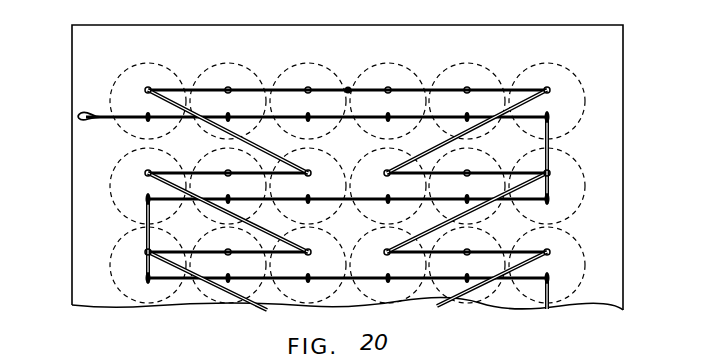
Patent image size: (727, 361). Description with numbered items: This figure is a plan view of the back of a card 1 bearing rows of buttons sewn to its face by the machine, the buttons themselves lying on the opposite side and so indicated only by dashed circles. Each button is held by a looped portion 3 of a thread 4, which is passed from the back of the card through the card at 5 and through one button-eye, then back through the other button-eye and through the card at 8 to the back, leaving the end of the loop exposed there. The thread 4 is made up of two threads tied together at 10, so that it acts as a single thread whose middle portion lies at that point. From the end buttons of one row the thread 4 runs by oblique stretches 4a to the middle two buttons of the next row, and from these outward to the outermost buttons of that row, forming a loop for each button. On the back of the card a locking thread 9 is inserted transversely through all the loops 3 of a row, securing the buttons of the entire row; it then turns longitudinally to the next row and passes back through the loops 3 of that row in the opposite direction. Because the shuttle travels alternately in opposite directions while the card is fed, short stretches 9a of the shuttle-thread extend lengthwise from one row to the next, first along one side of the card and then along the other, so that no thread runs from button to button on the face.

The card 1 is at (215, 33).
The looped portion 3 is at (147, 116).
The thread 4 is at (269, 88).
The oblique stretches 4a is at (203, 122).
The card hole 5 is at (149, 88).
The card hole 8 is at (146, 119).
The locking thread 9 is at (353, 200).
The short stretches 9a is at (547, 160).
The tie point 10 is at (348, 87).